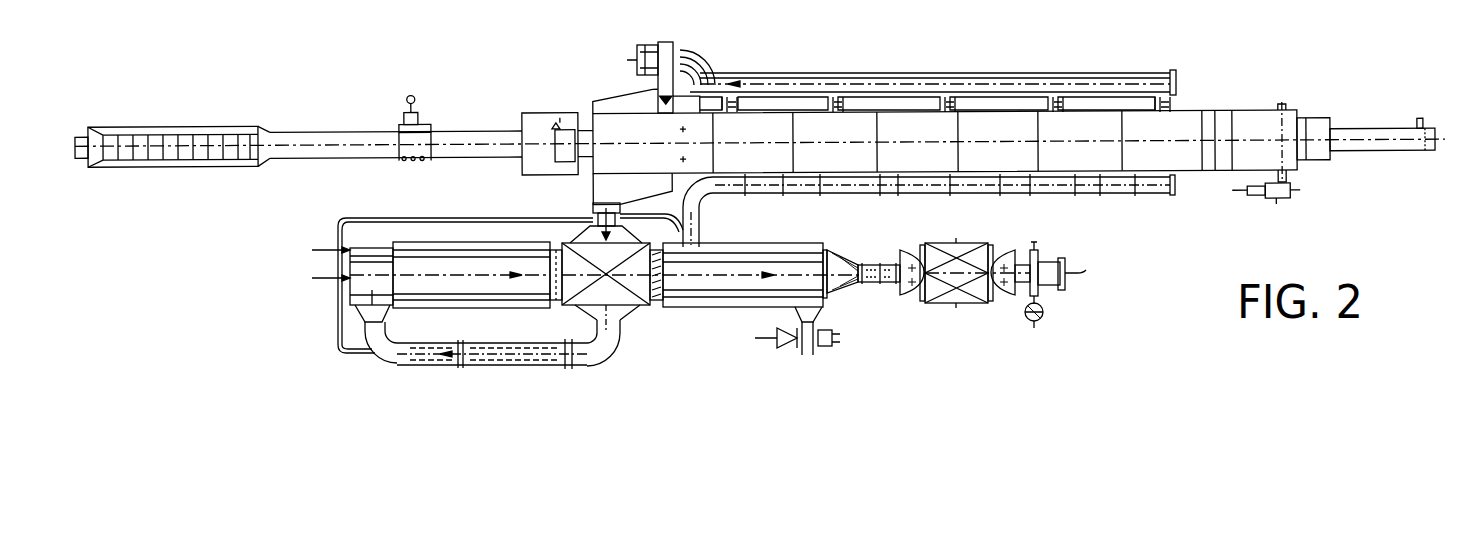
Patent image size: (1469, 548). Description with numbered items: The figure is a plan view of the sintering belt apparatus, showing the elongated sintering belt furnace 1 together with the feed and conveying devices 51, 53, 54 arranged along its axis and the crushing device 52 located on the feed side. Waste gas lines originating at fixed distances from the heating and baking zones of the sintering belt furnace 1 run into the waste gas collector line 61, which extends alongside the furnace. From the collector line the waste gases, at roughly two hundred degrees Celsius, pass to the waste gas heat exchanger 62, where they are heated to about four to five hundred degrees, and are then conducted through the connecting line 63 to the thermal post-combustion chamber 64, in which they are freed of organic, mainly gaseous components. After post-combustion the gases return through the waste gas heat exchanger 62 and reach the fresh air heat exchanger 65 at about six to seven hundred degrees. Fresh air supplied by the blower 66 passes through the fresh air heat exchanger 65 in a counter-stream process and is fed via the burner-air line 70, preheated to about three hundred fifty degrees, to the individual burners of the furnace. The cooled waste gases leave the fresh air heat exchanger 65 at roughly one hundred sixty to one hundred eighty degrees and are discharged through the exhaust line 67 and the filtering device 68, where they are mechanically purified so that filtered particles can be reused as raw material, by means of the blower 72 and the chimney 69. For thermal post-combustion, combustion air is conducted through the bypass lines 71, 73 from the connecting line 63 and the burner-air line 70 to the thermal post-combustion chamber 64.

The sintering belt furnace 1 is at (1250, 110).
The feed device 51 is at (213, 126).
The crushing device 52 is at (420, 106).
The conveying device 53 is at (492, 130).
The conveying device 54 is at (1355, 127).
The waste gas collector line 61 is at (907, 76).
The waste gas heat exchanger 62 is at (642, 307).
The connecting line 63 is at (538, 357).
The thermal post-combustion chamber 64 is at (312, 250).
The fresh air heat exchanger 65 is at (730, 298).
The blower 66 is at (832, 346).
The exhaust line 67 is at (880, 284).
The filtering device 68 is at (955, 305).
The chimney 69 is at (1038, 326).
The burner-air line 70 is at (918, 191).
The bypass line 71 is at (333, 322).
The blower 72 is at (1066, 276).
The bypass line 73 is at (455, 217).